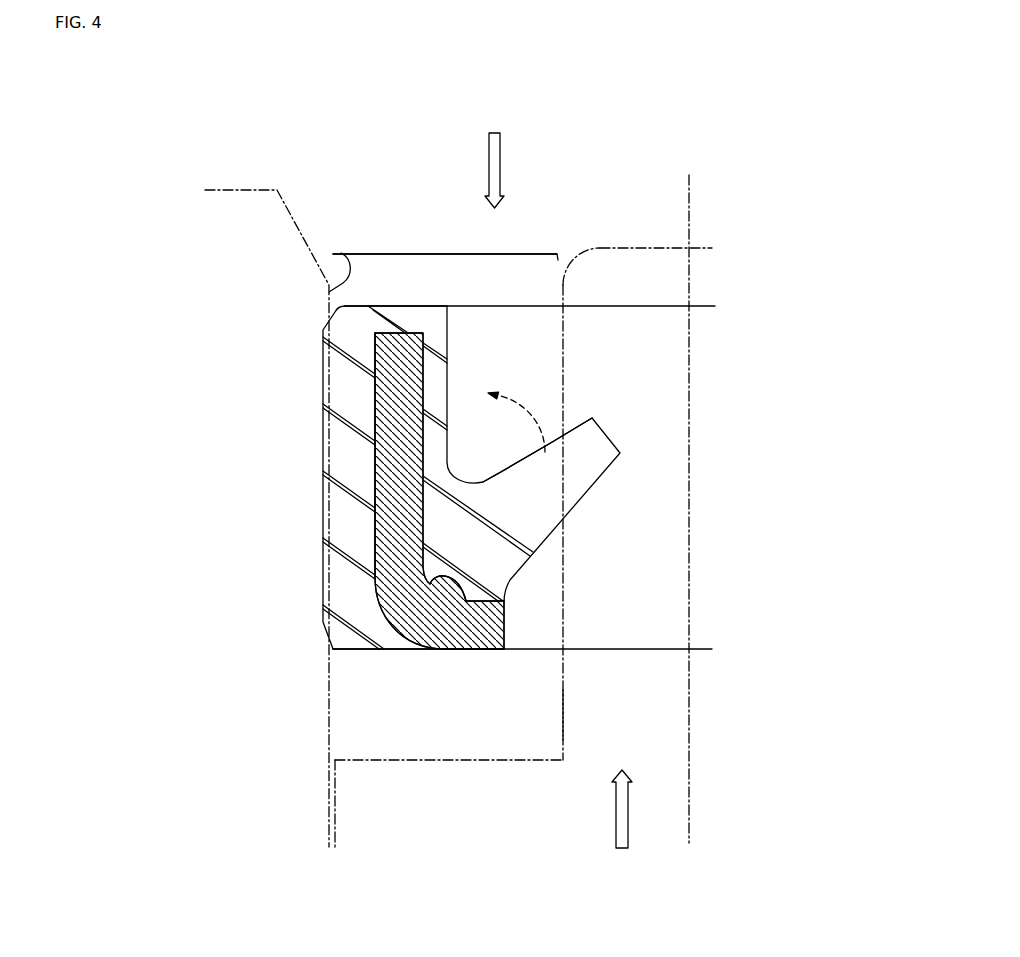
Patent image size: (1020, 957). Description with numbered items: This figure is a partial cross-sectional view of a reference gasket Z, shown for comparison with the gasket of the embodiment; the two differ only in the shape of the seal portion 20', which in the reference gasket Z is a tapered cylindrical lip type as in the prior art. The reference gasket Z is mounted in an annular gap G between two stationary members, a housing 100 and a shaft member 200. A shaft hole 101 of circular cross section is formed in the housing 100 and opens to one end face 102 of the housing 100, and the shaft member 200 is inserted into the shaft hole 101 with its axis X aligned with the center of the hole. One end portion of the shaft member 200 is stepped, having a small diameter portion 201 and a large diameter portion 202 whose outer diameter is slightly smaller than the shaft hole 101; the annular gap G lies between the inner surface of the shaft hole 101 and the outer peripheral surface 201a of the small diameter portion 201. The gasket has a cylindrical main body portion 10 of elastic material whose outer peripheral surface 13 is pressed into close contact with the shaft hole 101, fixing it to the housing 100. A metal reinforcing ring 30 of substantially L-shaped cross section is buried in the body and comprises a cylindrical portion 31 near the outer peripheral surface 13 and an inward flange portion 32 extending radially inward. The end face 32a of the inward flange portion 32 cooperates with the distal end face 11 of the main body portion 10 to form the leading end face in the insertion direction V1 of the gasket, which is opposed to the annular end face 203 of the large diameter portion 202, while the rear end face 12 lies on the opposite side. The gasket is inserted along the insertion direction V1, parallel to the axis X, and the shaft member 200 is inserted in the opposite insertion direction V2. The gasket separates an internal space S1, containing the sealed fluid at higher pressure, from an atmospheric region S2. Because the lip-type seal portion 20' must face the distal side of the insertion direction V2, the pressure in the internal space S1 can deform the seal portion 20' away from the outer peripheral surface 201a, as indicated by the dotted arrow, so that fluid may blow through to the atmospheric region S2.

The housing 100 is at (226, 182).
The shaft hole 101 is at (341, 253).
The one end face 102 is at (262, 190).
The main body portion 10 is at (433, 298).
The distal end face 11 is at (398, 651).
The rear end face 12 is at (381, 306).
The outer peripheral surface 13 is at (322, 458).
The seal portion 20' is at (646, 510).
The reinforcing ring 30 is at (434, 515).
The cylindrical portion 31 is at (375, 394).
The inward flange portion 32 is at (425, 583).
The end face 32a is at (487, 649).
The shaft member 200 is at (661, 245).
The small diameter portion 201 is at (583, 688).
The outer peripheral surface 201a is at (560, 712).
The large diameter portion 202 is at (350, 827).
The annular end face 203 is at (345, 762).
The annular gap G is at (452, 254).
The reference gasket Z is at (458, 140).
The axis X is at (689, 820).
The internal space S1 is at (400, 728).
The atmospheric region S2 is at (558, 148).
The insertion direction V1 is at (509, 170).
The insertion direction V2 is at (605, 809).